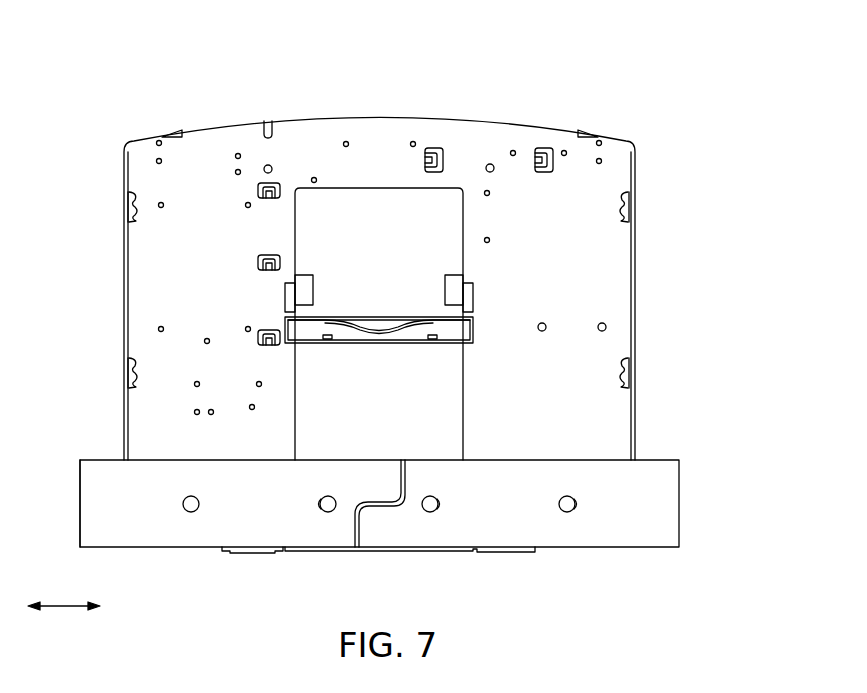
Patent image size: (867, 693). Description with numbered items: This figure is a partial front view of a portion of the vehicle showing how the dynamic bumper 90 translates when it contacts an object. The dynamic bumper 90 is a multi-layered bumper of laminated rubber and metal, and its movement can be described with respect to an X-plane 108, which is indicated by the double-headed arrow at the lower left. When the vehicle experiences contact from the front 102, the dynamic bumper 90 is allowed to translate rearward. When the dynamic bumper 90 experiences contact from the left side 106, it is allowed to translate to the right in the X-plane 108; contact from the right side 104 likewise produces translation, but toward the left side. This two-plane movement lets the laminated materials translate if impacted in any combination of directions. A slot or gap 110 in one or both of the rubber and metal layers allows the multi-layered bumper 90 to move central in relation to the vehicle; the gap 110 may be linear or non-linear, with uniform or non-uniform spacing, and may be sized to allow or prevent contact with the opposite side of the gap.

The dynamic bumper 90 is at (645, 563).
The front 102 is at (498, 533).
The right side 104 is at (679, 502).
The left side 106 is at (80, 503).
The X-plane 108 is at (75, 604).
The slot or gap 110 is at (355, 548).